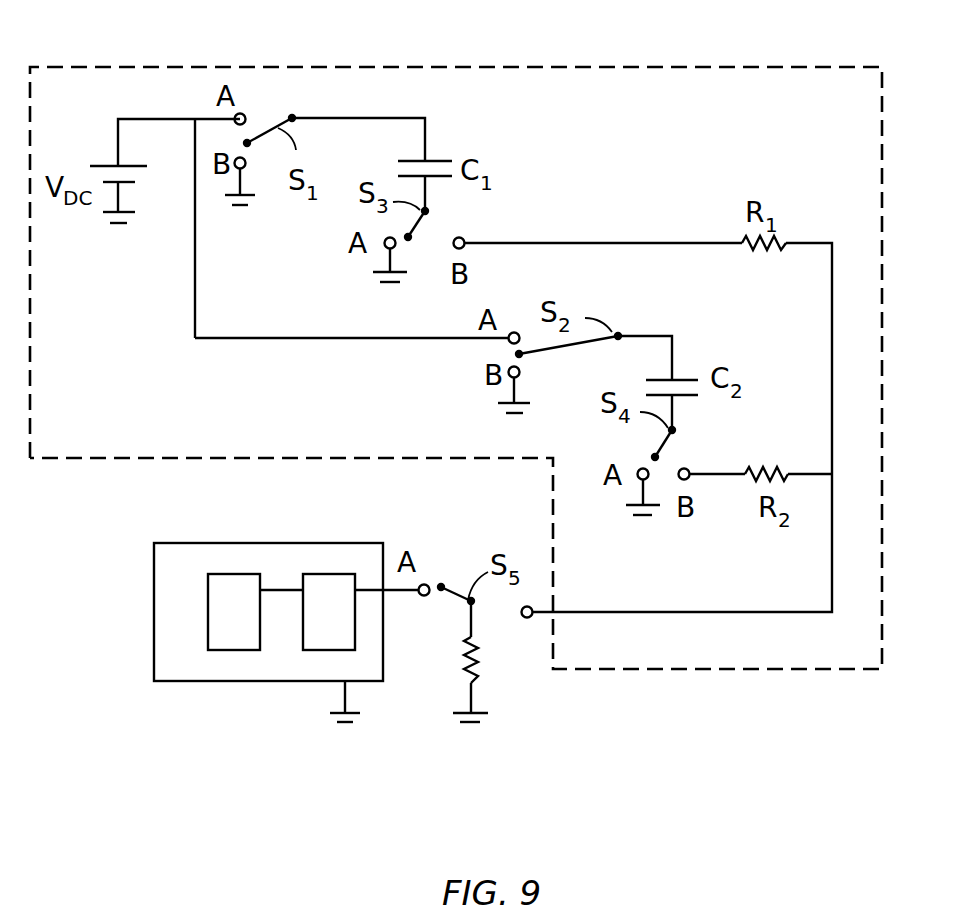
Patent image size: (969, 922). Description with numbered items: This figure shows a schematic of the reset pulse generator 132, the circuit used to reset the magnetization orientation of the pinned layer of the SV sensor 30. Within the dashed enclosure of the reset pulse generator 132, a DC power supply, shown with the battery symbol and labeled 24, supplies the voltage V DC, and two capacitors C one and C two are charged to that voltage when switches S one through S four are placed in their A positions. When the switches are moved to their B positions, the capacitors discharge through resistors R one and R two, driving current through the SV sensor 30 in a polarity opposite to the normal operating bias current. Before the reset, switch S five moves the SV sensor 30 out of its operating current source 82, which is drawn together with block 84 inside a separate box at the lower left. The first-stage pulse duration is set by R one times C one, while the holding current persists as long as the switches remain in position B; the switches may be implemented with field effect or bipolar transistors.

The reset pulse generator 132 is at (553, 63).
The DC voltage source 24 is at (140, 178).
The processing block 84 is at (230, 652).
The operating current source 82 is at (313, 652).
The SV sensor 30 is at (453, 663).